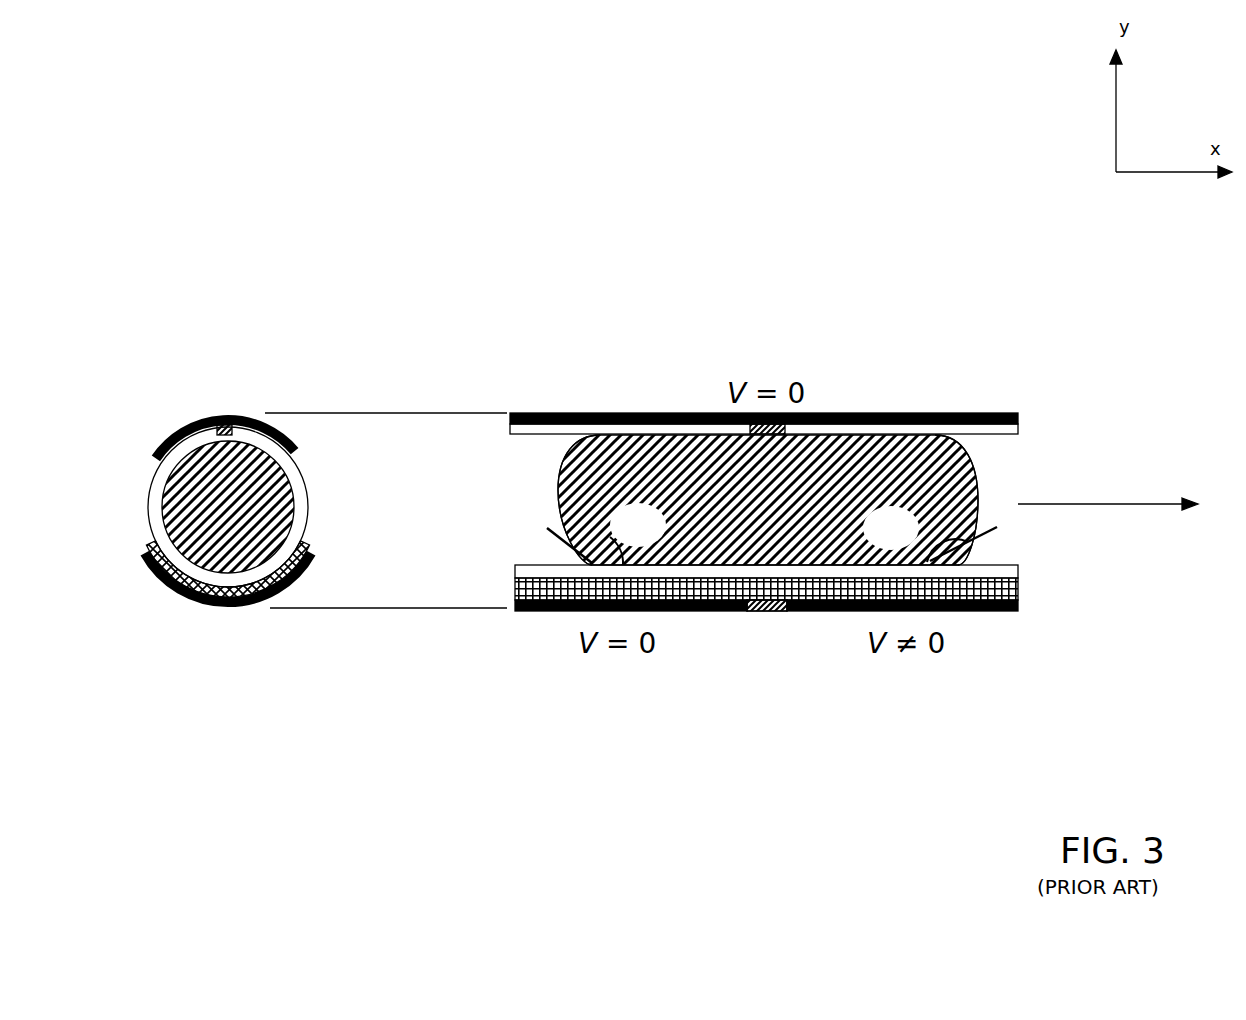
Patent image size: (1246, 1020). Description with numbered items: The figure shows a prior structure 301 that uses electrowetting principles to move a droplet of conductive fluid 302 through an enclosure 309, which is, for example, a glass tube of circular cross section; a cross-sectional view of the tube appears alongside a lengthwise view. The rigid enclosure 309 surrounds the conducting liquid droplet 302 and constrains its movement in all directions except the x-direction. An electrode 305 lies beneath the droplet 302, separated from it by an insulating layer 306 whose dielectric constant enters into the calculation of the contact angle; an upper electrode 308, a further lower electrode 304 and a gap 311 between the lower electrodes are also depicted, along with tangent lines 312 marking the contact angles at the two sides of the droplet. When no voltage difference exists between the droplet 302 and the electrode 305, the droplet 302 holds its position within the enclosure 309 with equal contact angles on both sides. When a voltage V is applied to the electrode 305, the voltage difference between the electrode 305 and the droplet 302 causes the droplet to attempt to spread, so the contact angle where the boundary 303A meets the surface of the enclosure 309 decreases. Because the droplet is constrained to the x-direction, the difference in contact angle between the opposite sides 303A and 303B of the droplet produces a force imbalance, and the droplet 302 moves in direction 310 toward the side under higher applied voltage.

The prior structure 301 is at (828, 280).
The droplet of conductive fluid 302 is at (972, 477).
The boundary 303A is at (977, 505).
The opposite side of the fluid droplet 303B is at (550, 497).
The first lower electrode 304 is at (528, 611).
The electrode 305 is at (992, 613).
The insulating layer 306 is at (1018, 593).
The upper electrode 308 is at (905, 415).
The enclosure 309 is at (507, 428).
The direction 310 is at (1133, 505).
The electrode gap 311 is at (767, 613).
The contact angle tangent line 312 is at (515, 522).